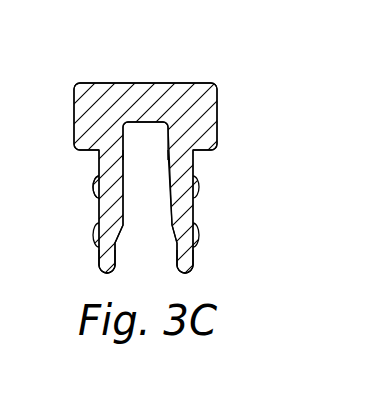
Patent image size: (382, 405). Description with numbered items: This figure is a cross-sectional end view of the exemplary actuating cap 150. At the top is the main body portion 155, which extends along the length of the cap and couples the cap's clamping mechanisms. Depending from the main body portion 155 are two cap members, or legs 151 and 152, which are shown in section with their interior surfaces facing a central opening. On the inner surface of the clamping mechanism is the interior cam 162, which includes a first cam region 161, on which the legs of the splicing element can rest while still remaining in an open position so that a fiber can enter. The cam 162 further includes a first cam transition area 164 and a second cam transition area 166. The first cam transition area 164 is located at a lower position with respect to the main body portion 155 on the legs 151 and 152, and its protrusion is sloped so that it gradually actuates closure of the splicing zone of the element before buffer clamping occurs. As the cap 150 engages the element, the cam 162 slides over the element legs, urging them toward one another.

The cap 150 is at (172, 63).
The main body portion 155 is at (190, 98).
The second cam transition area 166 is at (122, 126).
The first cam transition area 164 is at (112, 178).
The first cam region 161 is at (98, 215).
The interior cam 162 is at (170, 157).
The cap member 151 is at (100, 259).
The cap member 152 is at (192, 254).